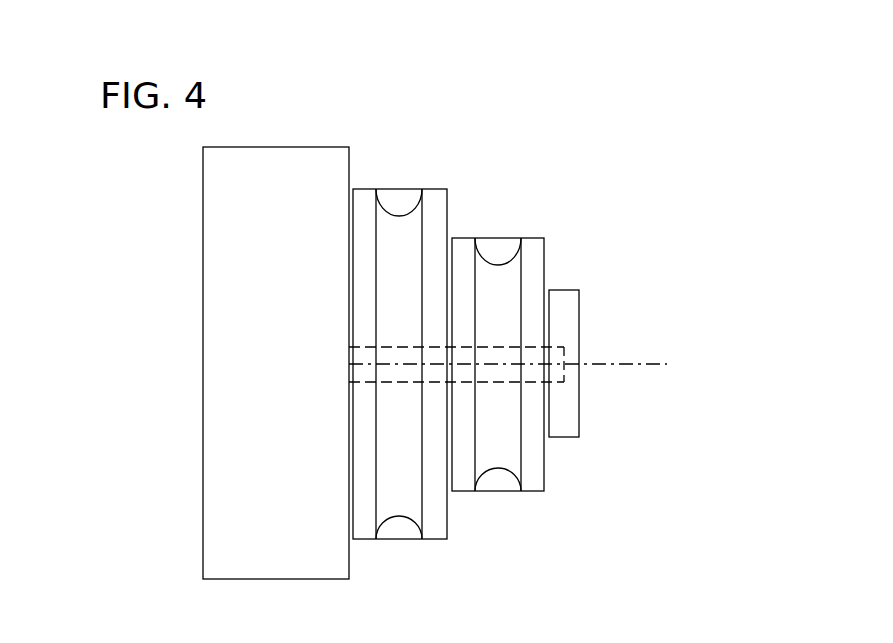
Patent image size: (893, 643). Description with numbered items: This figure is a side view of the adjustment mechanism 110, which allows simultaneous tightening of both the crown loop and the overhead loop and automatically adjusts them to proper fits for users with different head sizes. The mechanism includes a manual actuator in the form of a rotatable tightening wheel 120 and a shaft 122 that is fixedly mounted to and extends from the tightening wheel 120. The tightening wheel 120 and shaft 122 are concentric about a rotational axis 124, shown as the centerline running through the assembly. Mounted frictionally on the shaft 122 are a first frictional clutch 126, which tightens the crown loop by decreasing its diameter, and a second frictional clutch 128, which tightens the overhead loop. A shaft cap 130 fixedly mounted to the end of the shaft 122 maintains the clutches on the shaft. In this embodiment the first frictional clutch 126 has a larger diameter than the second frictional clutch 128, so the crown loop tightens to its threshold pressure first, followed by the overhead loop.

The adjustment mechanism 110 is at (493, 143).
The tightening wheel 120 is at (295, 376).
The shaft 122 is at (398, 382).
The rotational axis 124 is at (640, 362).
The first frictional clutch 126 is at (435, 189).
The second frictional clutch 128 is at (537, 238).
The shaft cap 130 is at (567, 290).